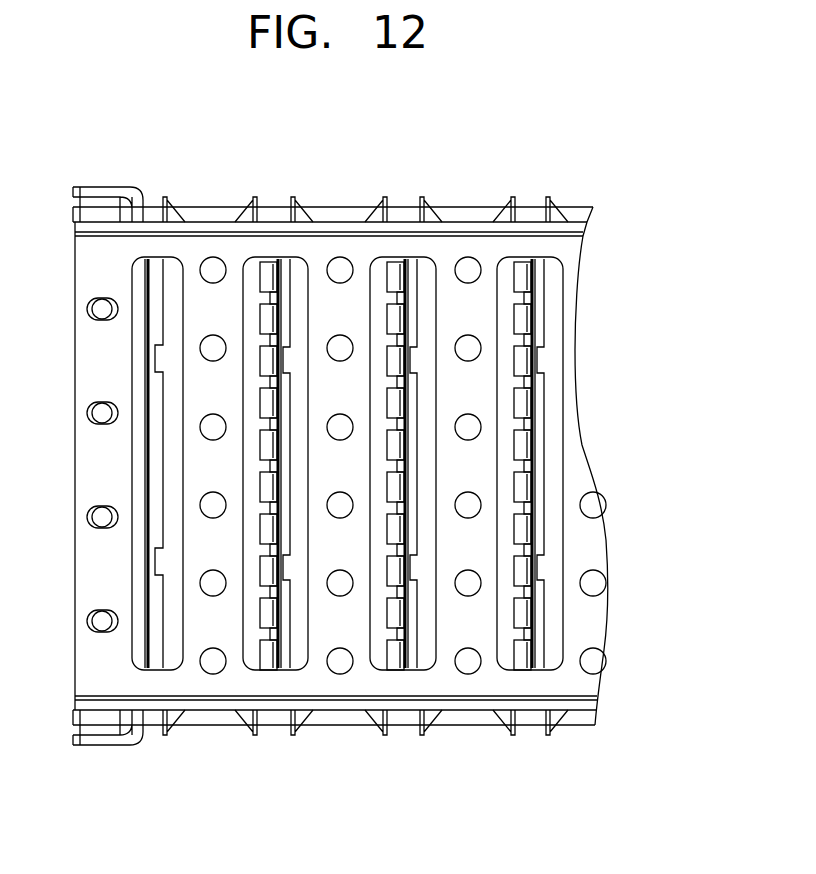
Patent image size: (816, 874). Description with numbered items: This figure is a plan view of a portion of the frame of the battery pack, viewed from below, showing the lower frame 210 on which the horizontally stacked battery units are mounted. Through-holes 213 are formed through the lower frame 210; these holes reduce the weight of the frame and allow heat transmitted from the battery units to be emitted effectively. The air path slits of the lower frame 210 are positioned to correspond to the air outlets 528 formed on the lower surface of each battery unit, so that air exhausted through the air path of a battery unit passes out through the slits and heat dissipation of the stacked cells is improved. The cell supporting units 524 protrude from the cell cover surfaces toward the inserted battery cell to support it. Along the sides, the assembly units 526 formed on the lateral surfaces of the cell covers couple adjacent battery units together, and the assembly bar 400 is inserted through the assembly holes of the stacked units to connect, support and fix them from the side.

The assembly bar 400 is at (468, 718).
The assembly unit 526 is at (548, 738).
The lower frame 210 is at (480, 383).
The through-hole 213 is at (463, 428).
The air outlet 528 is at (270, 318).
The cell supporting unit 524 is at (287, 360).